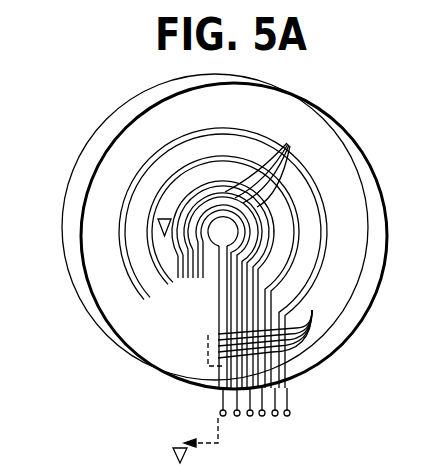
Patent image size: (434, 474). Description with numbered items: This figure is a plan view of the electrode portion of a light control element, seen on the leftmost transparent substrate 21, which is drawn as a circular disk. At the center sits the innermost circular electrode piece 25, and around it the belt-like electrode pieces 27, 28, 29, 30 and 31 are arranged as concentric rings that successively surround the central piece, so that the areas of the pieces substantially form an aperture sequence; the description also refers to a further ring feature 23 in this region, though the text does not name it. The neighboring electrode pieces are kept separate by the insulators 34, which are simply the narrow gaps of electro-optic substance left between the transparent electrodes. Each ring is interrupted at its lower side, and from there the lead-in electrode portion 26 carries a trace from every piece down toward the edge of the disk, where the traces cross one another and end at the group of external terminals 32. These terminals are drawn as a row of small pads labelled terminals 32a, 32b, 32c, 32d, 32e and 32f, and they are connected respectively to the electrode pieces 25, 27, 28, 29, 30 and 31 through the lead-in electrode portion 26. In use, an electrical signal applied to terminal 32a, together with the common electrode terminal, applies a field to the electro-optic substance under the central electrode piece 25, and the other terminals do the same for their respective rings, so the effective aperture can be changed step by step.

The transparent substrate 21 is at (374, 200).
The second ring electrode 23 is at (258, 233).
The innermost circular electrode piece 25 is at (215, 235).
The lead-in electrode portion 26 is at (312, 311).
The transparent electrode piece 27 is at (251, 174).
The transparent electrode piece 28 is at (225, 180).
The transparent electrode piece 29 is at (202, 178).
The transparent electrode piece 30 is at (167, 163).
The transparent electrode piece 31 is at (115, 150).
The group of external terminals 32 is at (260, 420).
The terminal 32a is at (220, 411).
The terminal 32b is at (235, 415).
The terminal 32c is at (248, 417).
The terminal 32d is at (263, 417).
The terminal 32e is at (278, 416).
The terminal 32f is at (291, 412).
The insulators 34 is at (310, 158).